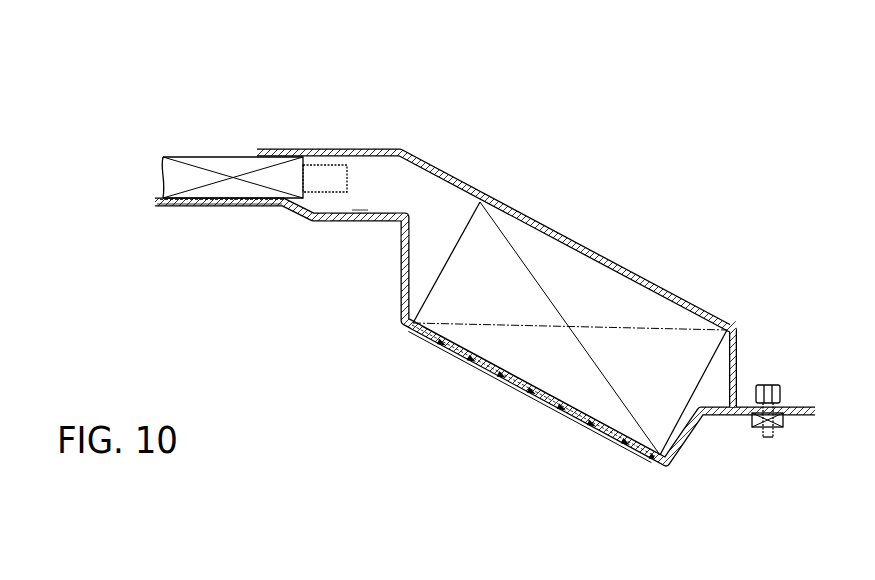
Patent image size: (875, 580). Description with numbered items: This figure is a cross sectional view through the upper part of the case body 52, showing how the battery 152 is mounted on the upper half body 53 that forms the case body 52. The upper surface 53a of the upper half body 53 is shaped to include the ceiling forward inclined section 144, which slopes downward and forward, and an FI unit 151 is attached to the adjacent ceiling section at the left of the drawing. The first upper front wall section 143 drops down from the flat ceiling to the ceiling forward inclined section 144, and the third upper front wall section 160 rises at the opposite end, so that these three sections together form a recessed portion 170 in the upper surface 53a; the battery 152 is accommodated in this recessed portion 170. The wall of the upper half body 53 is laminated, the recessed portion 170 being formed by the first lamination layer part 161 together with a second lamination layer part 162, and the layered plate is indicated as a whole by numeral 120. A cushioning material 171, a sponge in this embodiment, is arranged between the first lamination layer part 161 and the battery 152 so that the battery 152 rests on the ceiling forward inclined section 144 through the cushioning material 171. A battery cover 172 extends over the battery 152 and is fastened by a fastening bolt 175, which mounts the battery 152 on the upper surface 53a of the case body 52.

The case body 52 is at (360, 212).
The upper half body 53 is at (385, 212).
The upper surface of the upper half body 53a is at (403, 212).
The laminated plate assembly 120 is at (263, 369).
The first upper front wall section 143 is at (406, 268).
The ceiling forward inclined section 144 is at (482, 348).
The FI unit 151 is at (220, 167).
The battery 152 is at (582, 292).
The third upper front wall section 160 is at (690, 430).
The first lamination layer part 161 is at (337, 227).
The second layer 162 is at (203, 207).
The recessed portion 170 is at (586, 403).
The cushioning material 171 is at (513, 390).
The battery cover 172 is at (478, 196).
The fastening bolt 175 is at (770, 383).